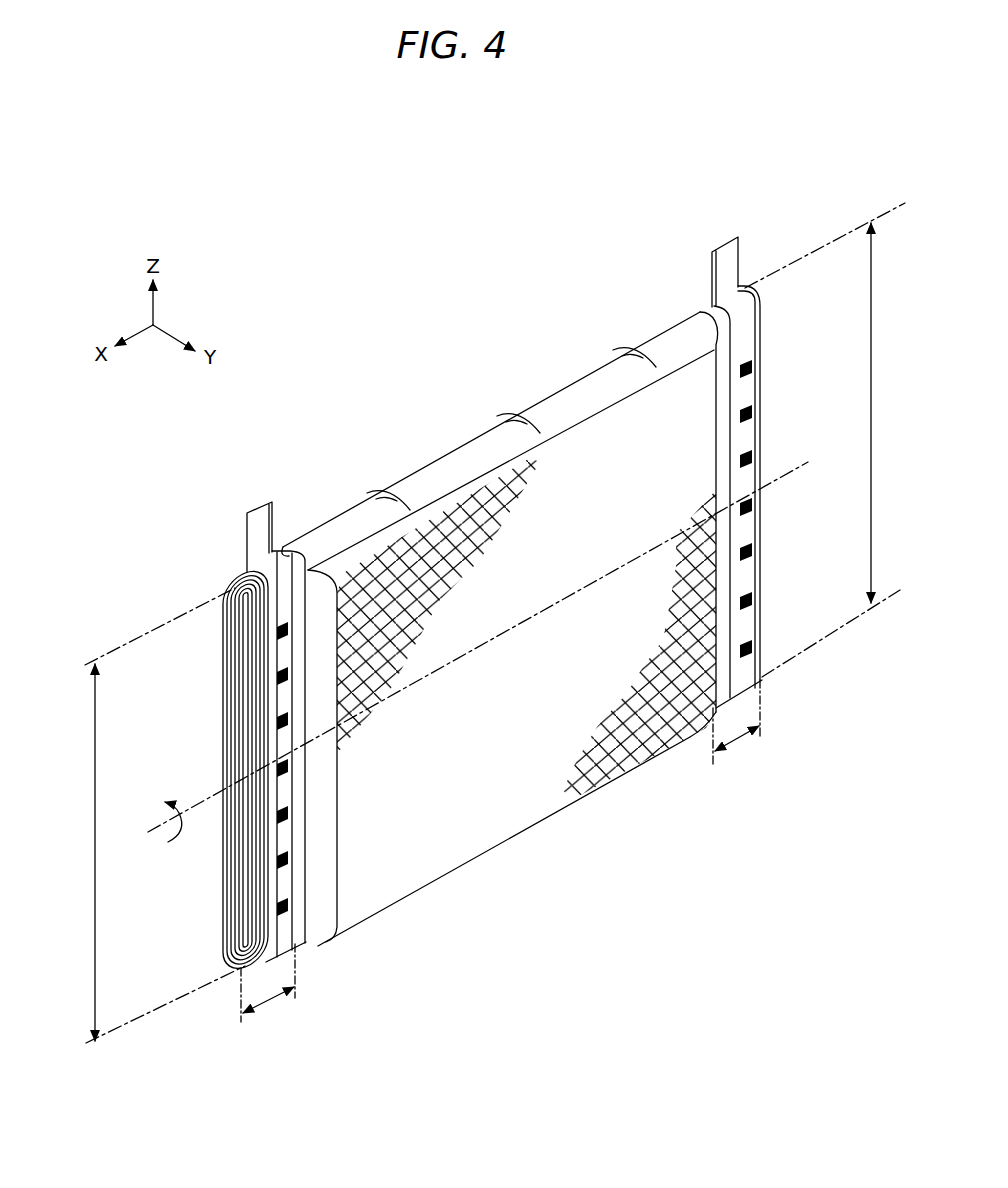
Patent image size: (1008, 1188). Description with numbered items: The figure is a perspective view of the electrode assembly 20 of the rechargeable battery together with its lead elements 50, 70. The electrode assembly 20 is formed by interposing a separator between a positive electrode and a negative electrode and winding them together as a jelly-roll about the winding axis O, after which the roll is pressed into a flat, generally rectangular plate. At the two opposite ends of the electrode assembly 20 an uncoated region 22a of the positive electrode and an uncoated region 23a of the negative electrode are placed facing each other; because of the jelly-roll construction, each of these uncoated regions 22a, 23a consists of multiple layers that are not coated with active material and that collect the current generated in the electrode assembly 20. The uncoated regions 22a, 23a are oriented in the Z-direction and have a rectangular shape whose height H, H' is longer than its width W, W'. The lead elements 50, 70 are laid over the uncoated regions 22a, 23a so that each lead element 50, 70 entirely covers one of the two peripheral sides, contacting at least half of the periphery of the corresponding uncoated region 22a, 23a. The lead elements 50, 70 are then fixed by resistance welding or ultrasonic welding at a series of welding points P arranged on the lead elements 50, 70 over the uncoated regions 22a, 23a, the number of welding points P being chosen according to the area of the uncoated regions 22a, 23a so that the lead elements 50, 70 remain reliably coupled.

The electrode assembly 20 is at (495, 631).
The uncoated region of the positive electrode 22a is at (228, 598).
The uncoated region of the negative electrode 23a is at (763, 545).
The lead element 50 is at (230, 537).
The lead element 70 is at (752, 272).
The welding points P is at (276, 678).
The height of the uncoated region H is at (83, 852).
The height of the uncoated region H' is at (888, 413).
The width of the uncoated region W is at (268, 991).
The width of the uncoated region W' is at (737, 727).
The winding axis O is at (162, 826).